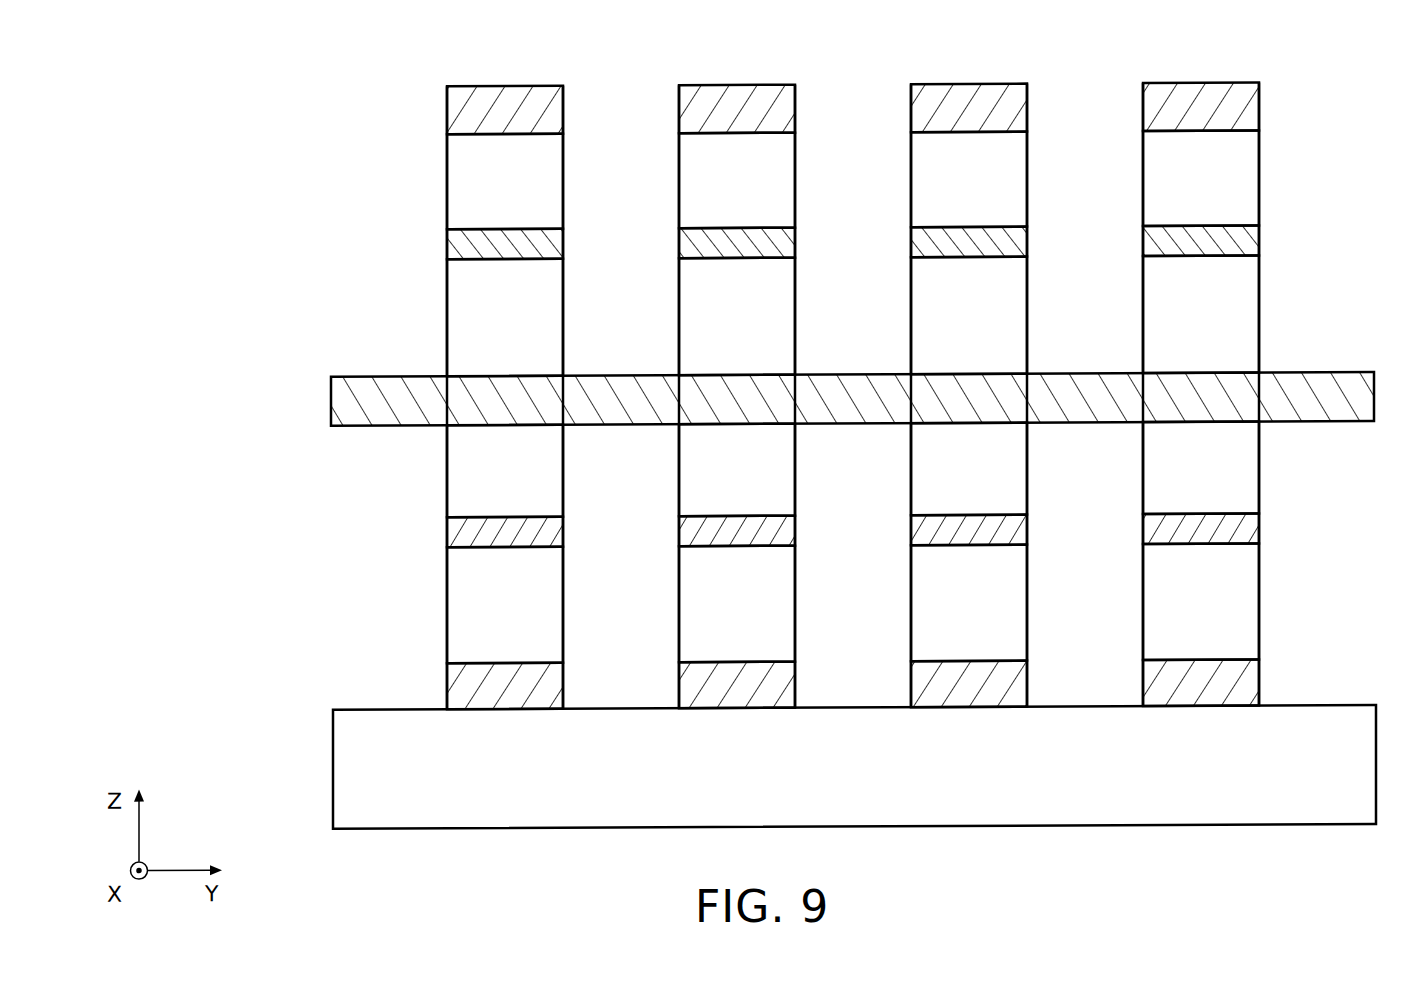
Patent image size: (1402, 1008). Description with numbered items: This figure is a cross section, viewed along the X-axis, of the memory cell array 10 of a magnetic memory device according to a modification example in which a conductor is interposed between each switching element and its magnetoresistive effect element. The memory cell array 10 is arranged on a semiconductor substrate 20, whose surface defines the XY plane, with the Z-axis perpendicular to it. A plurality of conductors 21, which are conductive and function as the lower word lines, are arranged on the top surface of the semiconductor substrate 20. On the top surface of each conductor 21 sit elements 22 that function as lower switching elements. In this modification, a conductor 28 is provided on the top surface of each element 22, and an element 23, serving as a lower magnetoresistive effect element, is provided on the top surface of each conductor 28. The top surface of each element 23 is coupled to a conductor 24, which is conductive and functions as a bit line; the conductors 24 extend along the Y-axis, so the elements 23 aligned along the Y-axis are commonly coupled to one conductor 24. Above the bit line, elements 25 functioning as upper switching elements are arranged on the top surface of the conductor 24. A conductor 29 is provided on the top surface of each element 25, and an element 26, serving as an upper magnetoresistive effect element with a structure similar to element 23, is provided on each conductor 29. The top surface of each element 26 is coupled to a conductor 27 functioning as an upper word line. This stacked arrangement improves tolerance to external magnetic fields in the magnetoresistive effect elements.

The memory cell array 10 is at (222, 58).
The semiconductor substrate 20 is at (333, 772).
The conductor 21 is at (447, 690).
The element 22 is at (447, 610).
The element 23 is at (447, 474).
The conductor 24 is at (331, 404).
The element 25 is at (447, 320).
The element 26 is at (447, 186).
The conductor 27 is at (447, 115).
The conductor 28 is at (447, 537).
The conductor 29 is at (447, 247).